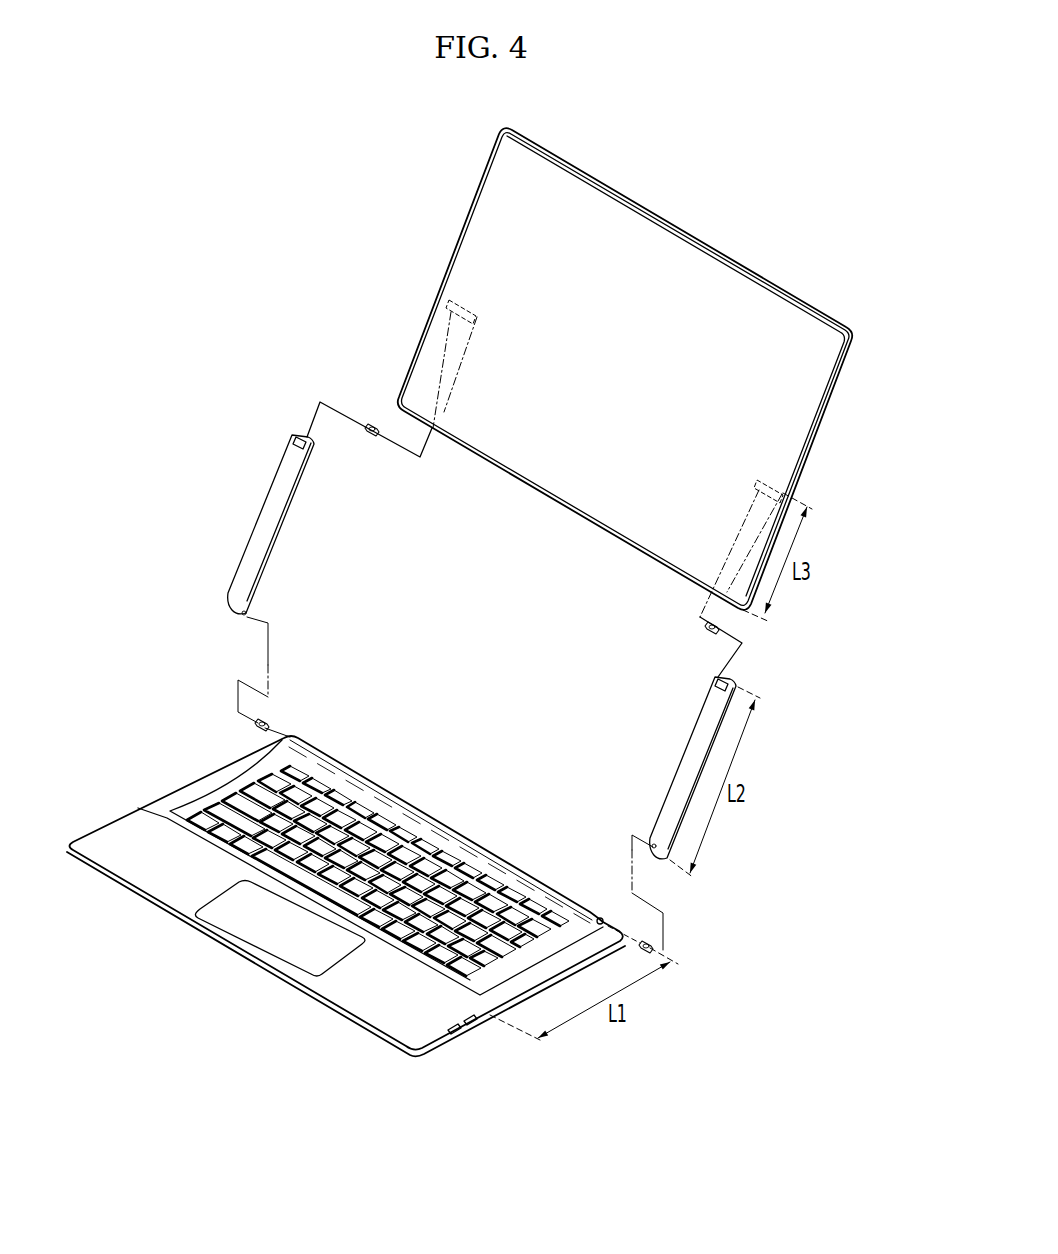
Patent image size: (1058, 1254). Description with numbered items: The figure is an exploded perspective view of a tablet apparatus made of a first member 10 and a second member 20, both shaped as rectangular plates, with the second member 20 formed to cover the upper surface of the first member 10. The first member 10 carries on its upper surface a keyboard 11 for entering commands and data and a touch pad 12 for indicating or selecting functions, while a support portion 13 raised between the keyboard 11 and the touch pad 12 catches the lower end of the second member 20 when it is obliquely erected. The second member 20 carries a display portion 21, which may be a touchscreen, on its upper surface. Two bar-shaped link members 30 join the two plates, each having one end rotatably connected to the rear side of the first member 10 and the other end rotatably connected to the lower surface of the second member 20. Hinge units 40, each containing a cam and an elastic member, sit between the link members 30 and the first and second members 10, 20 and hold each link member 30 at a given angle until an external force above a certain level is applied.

The first member 10 is at (568, 996).
The keyboard 11 is at (232, 797).
The touch pad 12 is at (258, 940).
The support portion 13 is at (390, 945).
The second member 20 is at (712, 217).
The display portion 21 is at (822, 394).
The link member 30 is at (250, 468).
The hinge unit 40 is at (372, 453).